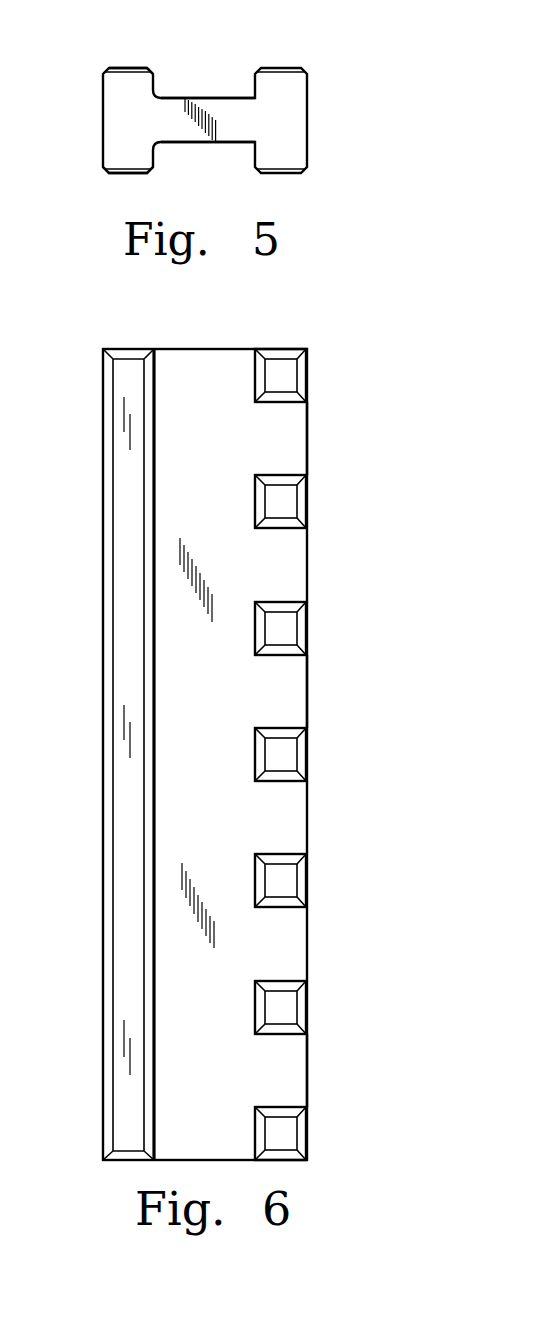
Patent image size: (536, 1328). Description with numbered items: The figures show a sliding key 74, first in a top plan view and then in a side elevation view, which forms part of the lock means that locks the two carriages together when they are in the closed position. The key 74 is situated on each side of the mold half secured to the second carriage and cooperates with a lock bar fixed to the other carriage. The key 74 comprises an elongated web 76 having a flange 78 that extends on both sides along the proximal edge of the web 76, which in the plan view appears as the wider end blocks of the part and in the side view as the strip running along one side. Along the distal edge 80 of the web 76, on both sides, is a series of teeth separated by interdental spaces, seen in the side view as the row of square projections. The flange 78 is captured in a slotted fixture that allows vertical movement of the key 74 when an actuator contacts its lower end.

In FIG. 5, the sliding key 74 is at (112, 149).
In FIG. 6, the sliding key 74 is at (123, 482).
In FIG. 5, the elongated web 76 is at (212, 107).
In FIG. 6, the elongated web 76 is at (198, 990).
In FIG. 5, the flange 78 is at (132, 77).
In FIG. 6, the flange 78 is at (124, 800).
In FIG. 5, the distal edge 80 is at (322, 120).